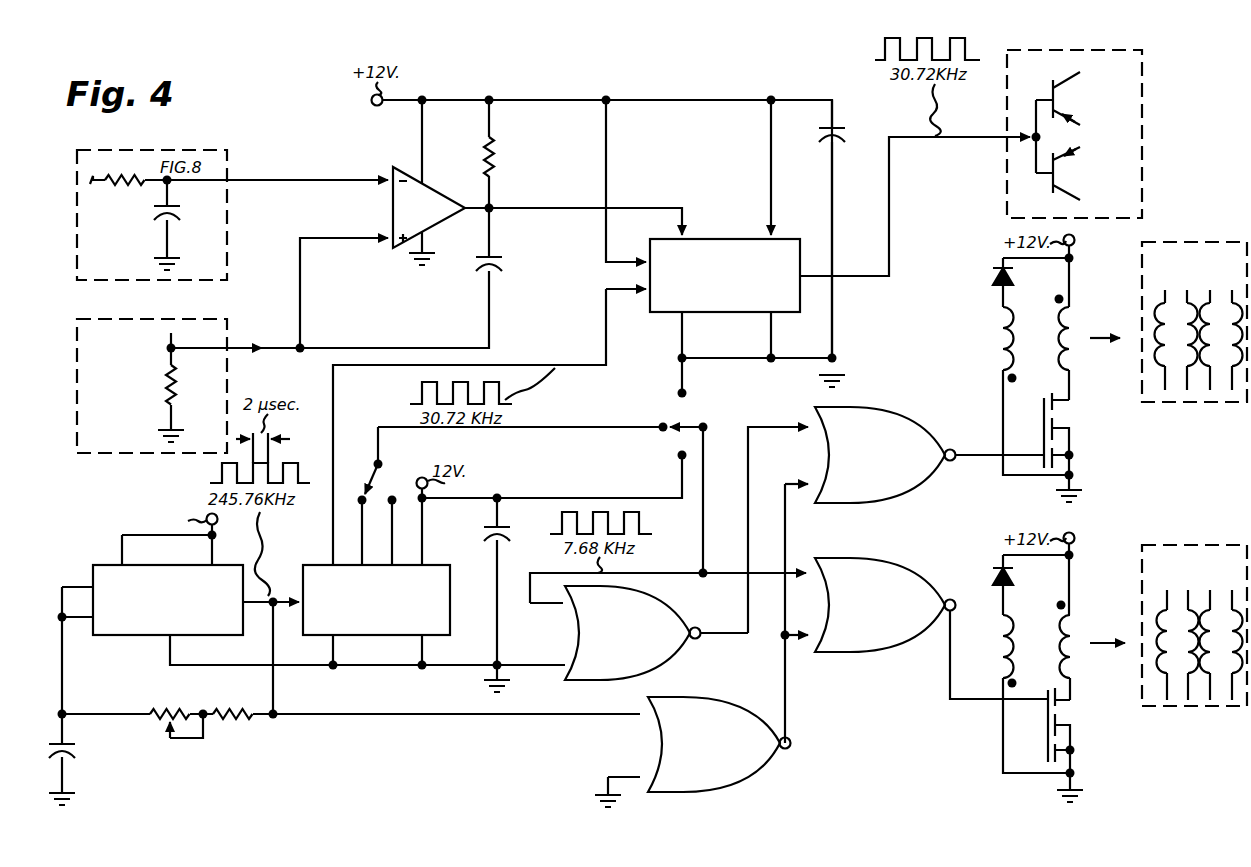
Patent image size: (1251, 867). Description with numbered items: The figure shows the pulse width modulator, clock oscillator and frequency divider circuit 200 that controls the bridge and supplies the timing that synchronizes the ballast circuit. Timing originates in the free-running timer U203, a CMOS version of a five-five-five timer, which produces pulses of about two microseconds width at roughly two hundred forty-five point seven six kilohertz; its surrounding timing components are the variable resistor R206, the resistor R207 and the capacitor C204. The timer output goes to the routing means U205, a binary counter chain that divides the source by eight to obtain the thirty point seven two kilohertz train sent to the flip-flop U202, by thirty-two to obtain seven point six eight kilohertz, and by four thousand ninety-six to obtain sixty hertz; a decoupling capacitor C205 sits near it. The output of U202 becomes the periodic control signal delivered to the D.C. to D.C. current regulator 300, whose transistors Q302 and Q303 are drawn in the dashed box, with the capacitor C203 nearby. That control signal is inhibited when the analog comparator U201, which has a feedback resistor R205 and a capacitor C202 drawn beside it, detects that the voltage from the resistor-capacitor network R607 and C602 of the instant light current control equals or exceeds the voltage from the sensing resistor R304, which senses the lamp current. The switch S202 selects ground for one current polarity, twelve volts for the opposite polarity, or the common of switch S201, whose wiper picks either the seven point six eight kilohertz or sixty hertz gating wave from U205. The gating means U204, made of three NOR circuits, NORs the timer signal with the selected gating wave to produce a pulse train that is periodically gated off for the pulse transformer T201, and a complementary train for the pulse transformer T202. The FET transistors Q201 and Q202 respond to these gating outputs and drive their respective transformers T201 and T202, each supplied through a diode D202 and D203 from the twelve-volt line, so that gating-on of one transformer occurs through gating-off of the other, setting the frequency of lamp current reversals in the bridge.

The pulse width modulator, clock oscillator and frequency divider circuit 200 is at (1169, 125).
The D.C. to D.C. current regulator 300 is at (635, 251).
The resistor R607 is at (136, 197).
The capacitor C602 is at (151, 224).
The analog comparator U201 is at (424, 182).
The resistor R205 is at (494, 150).
The capacitor C202 is at (494, 268).
The flip-flop U202 is at (830, 246).
The capacitor C203 is at (838, 134).
The transistor Q302 is at (1082, 98).
The transistor Q303 is at (1082, 173).
The diode D202 is at (993, 286).
The pulse transformer T201 is at (1125, 358).
The transistor Q201 is at (1075, 447).
The sensing resistor R304 is at (164, 368).
The switch S201 is at (384, 480).
The switch S202 is at (690, 422).
The free-running timer U203 is at (312, 612).
The routing means U205 is at (365, 608).
The capacitor C205 is at (485, 528).
The gating means U204 is at (747, 607).
The variable resistor R206 is at (158, 709).
The resistor R207 is at (230, 724).
The capacitor C204 is at (86, 778).
The diode D203 is at (991, 581).
The pulse transformer T202 is at (1125, 659).
The transistor Q202 is at (1075, 751).